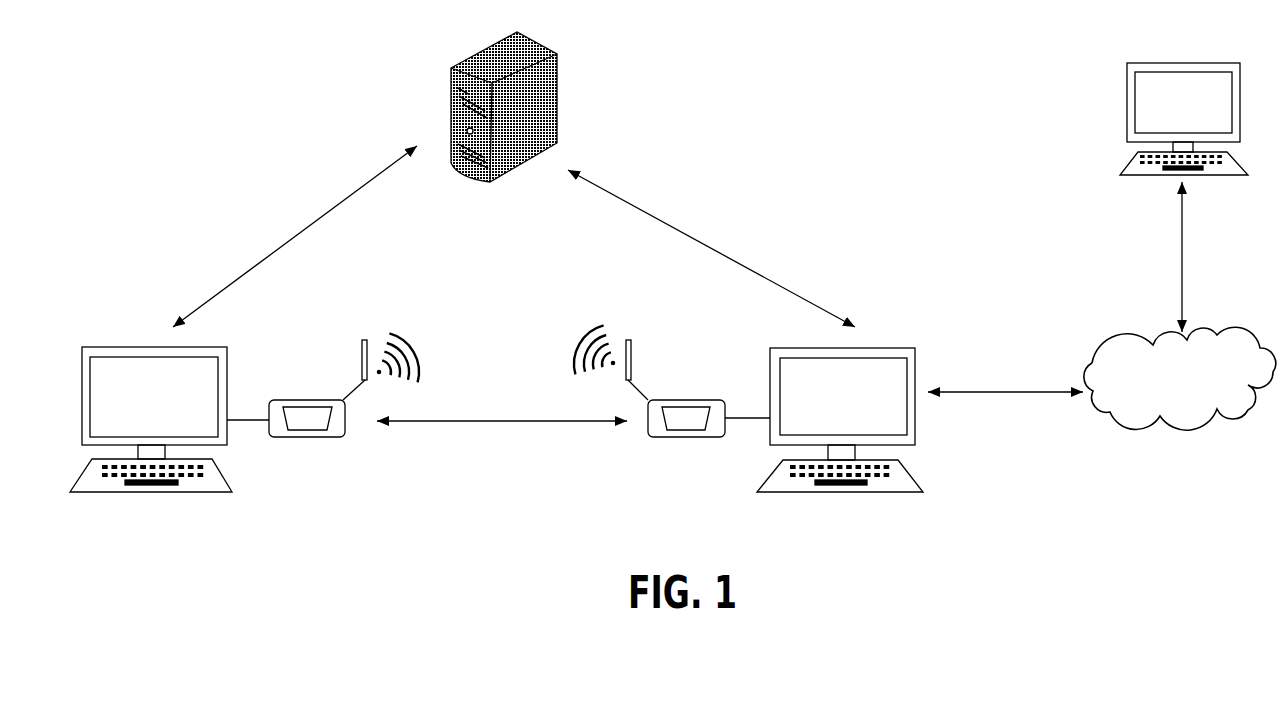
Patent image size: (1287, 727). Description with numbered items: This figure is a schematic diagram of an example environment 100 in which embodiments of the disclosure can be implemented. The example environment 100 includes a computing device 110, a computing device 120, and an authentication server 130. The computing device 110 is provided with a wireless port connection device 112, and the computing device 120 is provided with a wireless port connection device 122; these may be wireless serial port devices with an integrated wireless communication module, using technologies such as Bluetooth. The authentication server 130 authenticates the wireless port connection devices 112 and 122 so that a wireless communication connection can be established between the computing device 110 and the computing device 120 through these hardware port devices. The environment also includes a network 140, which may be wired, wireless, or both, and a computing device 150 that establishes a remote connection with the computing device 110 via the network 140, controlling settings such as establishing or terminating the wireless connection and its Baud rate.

The example environment 100 is at (197, 85).
The computing device 110 is at (917, 350).
The wireless port connection device 112 is at (667, 398).
The computing device 120 is at (229, 352).
The wireless port connection device 122 is at (331, 437).
The authentication server 130 is at (558, 53).
The network 140 is at (1203, 327).
The computing device 150 is at (1240, 87).